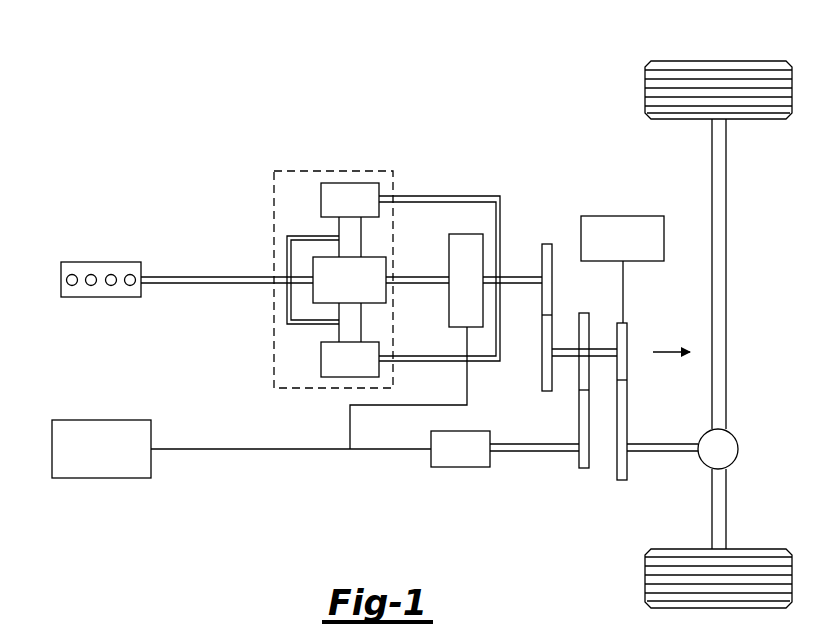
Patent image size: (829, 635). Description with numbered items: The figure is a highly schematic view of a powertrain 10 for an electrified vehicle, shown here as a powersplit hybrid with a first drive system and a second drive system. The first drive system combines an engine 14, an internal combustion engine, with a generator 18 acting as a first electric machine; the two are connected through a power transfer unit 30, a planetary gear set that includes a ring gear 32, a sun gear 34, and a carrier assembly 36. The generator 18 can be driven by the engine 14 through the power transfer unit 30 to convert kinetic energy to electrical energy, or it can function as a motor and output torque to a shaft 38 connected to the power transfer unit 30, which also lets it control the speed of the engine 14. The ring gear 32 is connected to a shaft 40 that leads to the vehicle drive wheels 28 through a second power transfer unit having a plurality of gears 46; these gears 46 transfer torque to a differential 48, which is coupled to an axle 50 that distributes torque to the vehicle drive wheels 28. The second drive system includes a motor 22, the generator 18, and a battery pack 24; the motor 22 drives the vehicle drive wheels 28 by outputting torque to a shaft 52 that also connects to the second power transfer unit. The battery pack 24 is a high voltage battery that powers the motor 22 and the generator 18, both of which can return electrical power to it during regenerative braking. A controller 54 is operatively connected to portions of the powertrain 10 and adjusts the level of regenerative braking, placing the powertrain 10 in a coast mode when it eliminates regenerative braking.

The powertrain 10 is at (138, 97).
The engine 14 is at (61, 263).
The generator 18 is at (466, 234).
The motor 22 is at (461, 467).
The battery pack 24 is at (103, 478).
The vehicle drive wheels 28 is at (718, 61).
The power transfer unit 30 is at (272, 176).
The ring gear 32 is at (321, 200).
The sun gear 34 is at (376, 303).
The carrier assembly 36 is at (287, 310).
The shaft 38 is at (418, 277).
The shaft 40 is at (522, 277).
The gears 46 is at (579, 382).
The differential 48 is at (738, 449).
The axle 50 is at (727, 212).
The shaft 52 is at (547, 452).
The controller 54 is at (623, 216).